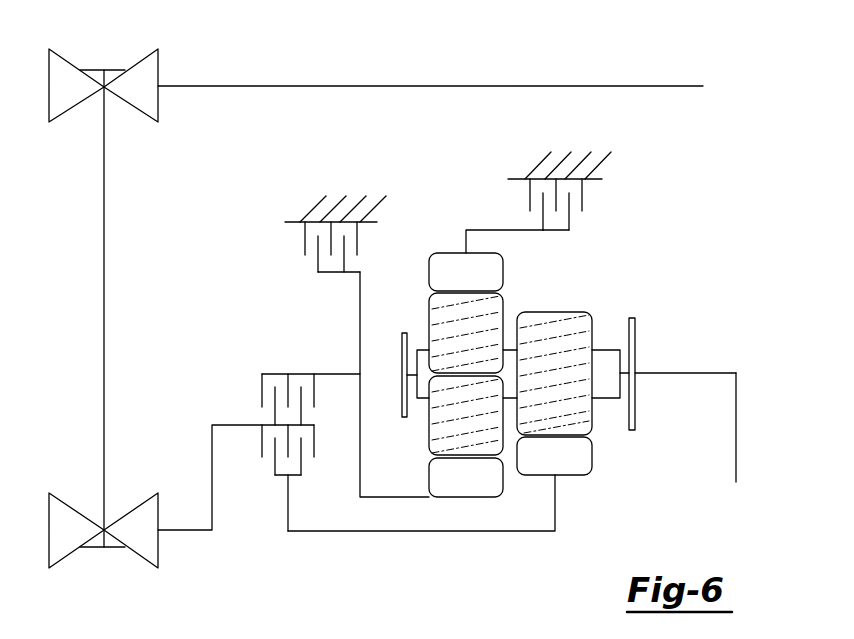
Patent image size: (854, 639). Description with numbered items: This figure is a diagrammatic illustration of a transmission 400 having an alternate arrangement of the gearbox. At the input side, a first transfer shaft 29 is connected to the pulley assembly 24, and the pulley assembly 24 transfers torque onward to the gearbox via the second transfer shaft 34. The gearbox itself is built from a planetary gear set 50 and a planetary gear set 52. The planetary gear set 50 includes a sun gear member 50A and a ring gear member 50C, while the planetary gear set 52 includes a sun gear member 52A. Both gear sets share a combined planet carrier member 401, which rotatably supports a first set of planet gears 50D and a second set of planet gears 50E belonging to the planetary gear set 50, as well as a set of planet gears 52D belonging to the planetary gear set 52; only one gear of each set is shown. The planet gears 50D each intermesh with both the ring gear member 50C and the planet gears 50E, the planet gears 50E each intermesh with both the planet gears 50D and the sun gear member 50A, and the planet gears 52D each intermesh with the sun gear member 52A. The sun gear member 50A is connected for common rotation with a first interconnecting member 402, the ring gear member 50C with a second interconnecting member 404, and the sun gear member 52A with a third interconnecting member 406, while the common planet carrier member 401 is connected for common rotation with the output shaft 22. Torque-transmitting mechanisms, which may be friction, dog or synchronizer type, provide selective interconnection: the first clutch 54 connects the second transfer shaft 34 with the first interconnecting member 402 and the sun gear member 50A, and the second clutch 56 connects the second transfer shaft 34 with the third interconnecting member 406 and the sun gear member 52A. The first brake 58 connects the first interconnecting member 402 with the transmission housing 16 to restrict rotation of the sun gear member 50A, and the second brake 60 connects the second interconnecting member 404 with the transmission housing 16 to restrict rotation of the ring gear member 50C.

The transmission housing 16 is at (378, 207).
The transmission output shaft 22 is at (736, 425).
The pulley assembly 24 is at (86, 44).
The first transfer shaft 29 is at (300, 86).
The second transfer shaft 34 is at (185, 531).
The planetary gear set 50 is at (449, 425).
The sun gear member 50A is at (484, 495).
The ring gear member 50C is at (484, 290).
The first set of planet gears 50D is at (429, 312).
The second set of planet gears 50E is at (429, 430).
The planetary gear set 52 is at (580, 420).
The sun gear member 52A is at (573, 472).
The set of planet gears 52D is at (558, 312).
The first clutch 54 is at (262, 395).
The second clutch 56 is at (262, 440).
The first brake 58 is at (305, 229).
The second brake 60 is at (583, 193).
The transmission 400 is at (733, 127).
The combined planet carrier member 401 is at (636, 337).
The first interconnecting member 402 is at (360, 300).
The second interconnecting member 404 is at (478, 230).
The third interconnecting member 406 is at (555, 493).